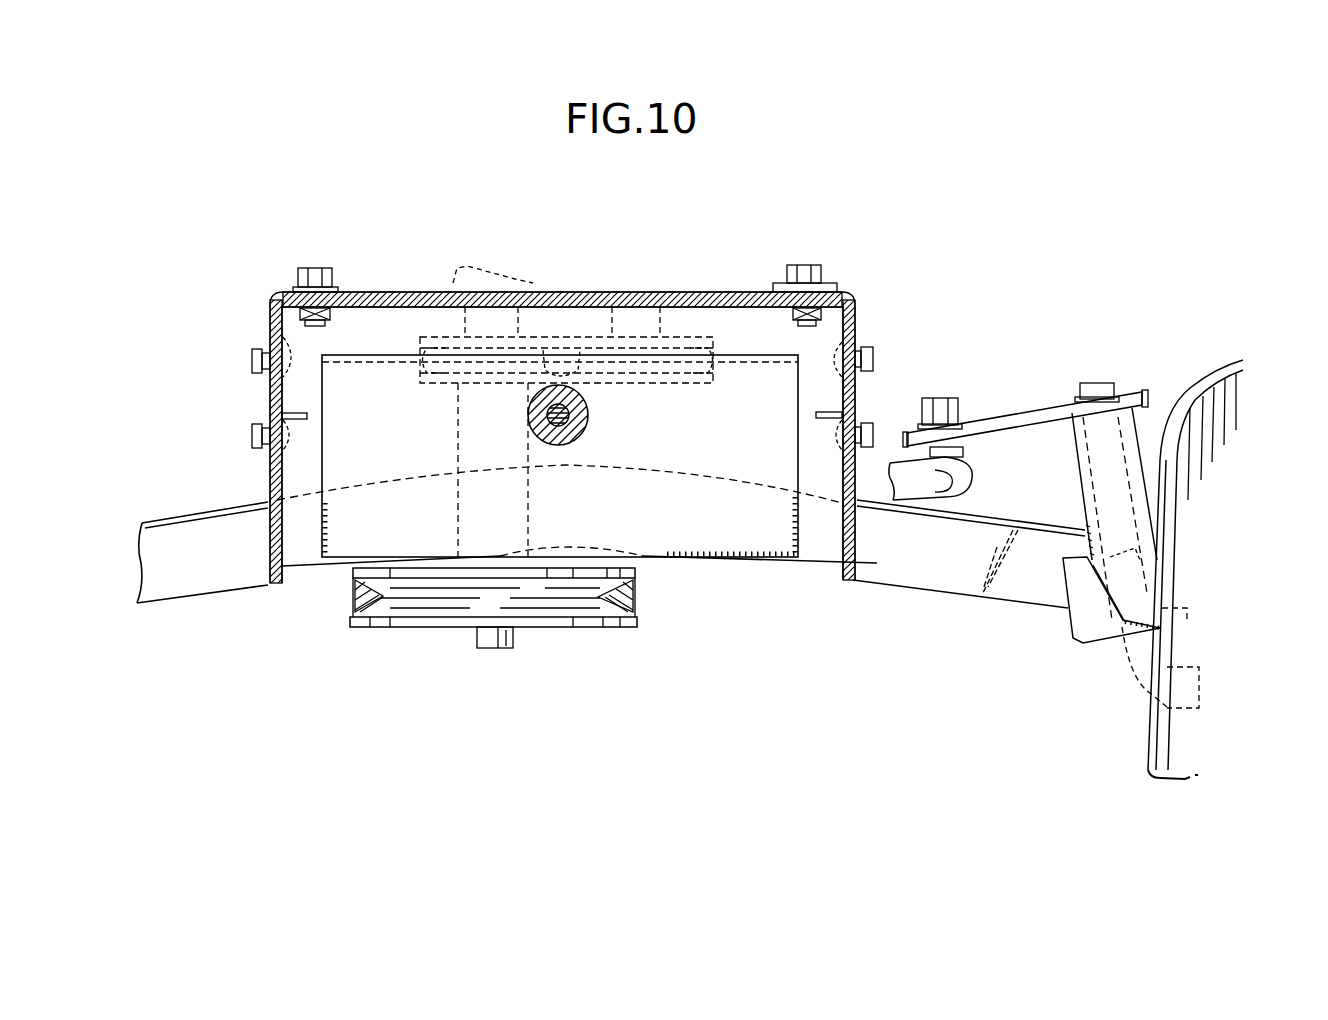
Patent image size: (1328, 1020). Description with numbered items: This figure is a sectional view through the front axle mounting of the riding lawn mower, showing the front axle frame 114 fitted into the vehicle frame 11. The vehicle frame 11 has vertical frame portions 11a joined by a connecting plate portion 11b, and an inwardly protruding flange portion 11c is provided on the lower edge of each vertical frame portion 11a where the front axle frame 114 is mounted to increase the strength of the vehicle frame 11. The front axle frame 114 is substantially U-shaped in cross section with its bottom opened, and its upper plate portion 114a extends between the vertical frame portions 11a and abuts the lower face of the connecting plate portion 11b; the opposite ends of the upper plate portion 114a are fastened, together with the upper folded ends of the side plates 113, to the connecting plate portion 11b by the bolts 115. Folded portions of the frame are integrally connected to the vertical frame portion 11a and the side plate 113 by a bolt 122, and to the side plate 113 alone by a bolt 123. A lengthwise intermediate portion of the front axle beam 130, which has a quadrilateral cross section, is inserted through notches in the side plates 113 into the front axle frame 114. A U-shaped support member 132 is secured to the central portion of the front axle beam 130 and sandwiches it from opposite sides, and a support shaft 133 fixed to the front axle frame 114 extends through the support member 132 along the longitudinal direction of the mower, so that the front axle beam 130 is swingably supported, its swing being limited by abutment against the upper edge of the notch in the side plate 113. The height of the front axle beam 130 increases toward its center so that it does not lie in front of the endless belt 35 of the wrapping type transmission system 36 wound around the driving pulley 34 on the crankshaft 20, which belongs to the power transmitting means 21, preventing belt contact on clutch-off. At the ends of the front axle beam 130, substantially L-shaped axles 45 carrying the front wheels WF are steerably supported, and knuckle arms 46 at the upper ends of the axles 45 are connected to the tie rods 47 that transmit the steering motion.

The vehicle frame 11 is at (638, 292).
The vertical frame portion 11a is at (283, 395).
The connecting plate portion 11b is at (683, 292).
The flange portion 11c is at (298, 420).
The crankshaft 20 is at (540, 482).
The power transmitting means 21 is at (606, 386).
The driving pulley 34 is at (447, 630).
The endless belt 35 is at (637, 597).
The wrapping type transmission system 36 is at (626, 632).
The axle 45 is at (1096, 384).
The knuckle arm 46 is at (993, 428).
The tie rod 47 is at (918, 482).
The side plate 113 is at (268, 530).
The front axle frame 114 is at (406, 307).
The upper plate portion 114a is at (570, 292).
The bolt 115 is at (313, 266).
The bolt 122 is at (251, 362).
The bolt 123 is at (251, 438).
The front axle beam 130 is at (913, 583).
The support member 132 is at (745, 362).
The support shaft 133 is at (550, 412).
The front wheel WF is at (1240, 380).